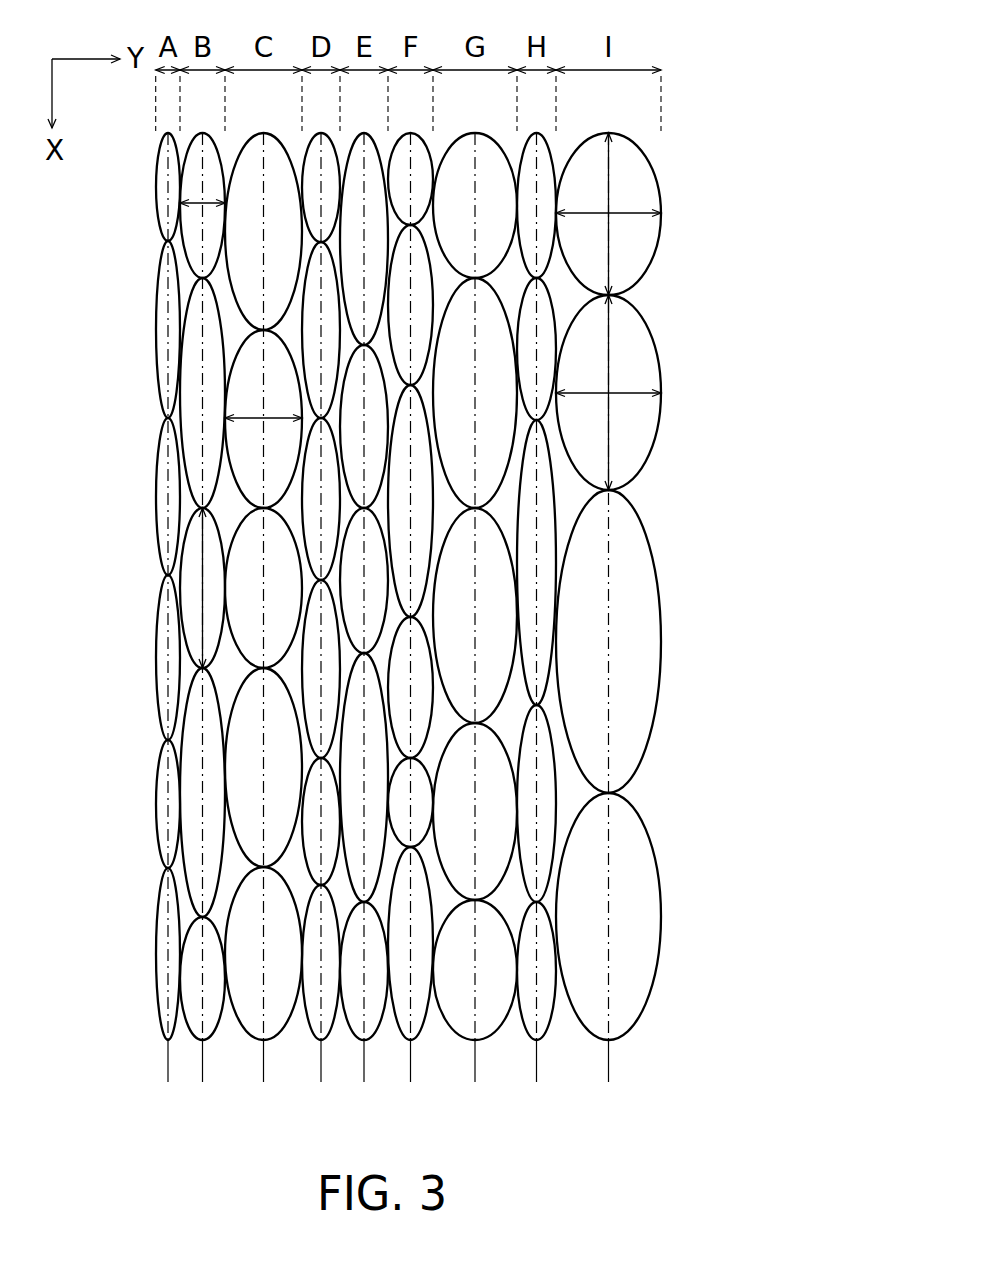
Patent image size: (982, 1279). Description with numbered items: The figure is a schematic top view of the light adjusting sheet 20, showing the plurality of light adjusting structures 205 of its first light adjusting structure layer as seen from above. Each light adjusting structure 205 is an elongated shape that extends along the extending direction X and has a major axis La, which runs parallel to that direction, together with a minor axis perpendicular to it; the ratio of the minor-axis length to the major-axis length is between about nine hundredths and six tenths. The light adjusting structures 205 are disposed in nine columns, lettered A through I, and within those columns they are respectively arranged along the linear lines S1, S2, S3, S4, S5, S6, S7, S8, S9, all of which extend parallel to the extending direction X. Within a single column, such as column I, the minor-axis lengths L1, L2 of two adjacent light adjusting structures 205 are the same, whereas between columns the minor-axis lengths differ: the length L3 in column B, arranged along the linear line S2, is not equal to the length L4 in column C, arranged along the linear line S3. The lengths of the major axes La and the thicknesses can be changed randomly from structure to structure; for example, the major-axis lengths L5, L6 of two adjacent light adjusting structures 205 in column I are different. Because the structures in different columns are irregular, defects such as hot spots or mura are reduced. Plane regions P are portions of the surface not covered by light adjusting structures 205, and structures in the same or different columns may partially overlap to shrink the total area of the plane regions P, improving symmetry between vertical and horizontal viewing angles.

The light adjusting sheet 20 is at (768, 60).
The light adjusting structure 205 is at (663, 597).
The plane region P is at (574, 770).
The length of the minor axis of a light adjusting structure in column I L1 is at (627, 217).
The length of the minor axis of an adjacent light adjusting structure in column I L2 is at (627, 387).
The length of the minor axis of a light adjusting structure in column B L3 is at (200, 207).
The length of the minor axis of a light adjusting structure in column C L4 is at (252, 418).
The length of the major axis of a light adjusting structure in column I L5 is at (610, 187).
The length of the major axis of an adjacent light adjusting structure in column I L6 is at (610, 437).
The major axis La is at (200, 595).
The linear line of column A S1 is at (168, 626).
The linear line of column B S2 is at (202, 626).
The linear line of column C S3 is at (263, 626).
The linear line of column D S4 is at (321, 626).
The linear line of column E S5 is at (364, 626).
The linear line of column F S6 is at (410, 626).
The linear line of column G S7 is at (475, 626).
The linear line of column H S8 is at (536, 626).
The linear line of column I S9 is at (653, 626).